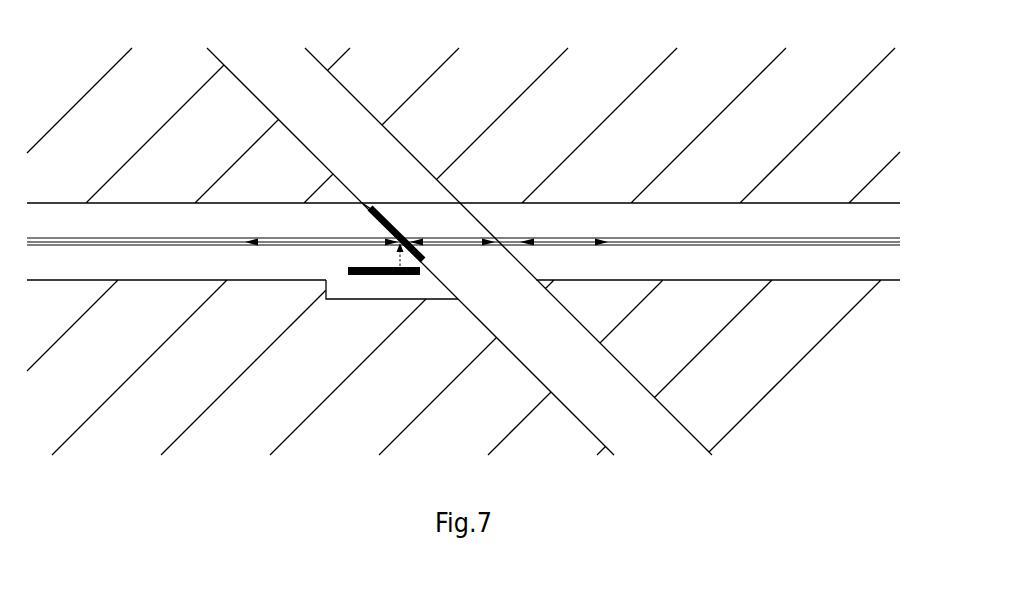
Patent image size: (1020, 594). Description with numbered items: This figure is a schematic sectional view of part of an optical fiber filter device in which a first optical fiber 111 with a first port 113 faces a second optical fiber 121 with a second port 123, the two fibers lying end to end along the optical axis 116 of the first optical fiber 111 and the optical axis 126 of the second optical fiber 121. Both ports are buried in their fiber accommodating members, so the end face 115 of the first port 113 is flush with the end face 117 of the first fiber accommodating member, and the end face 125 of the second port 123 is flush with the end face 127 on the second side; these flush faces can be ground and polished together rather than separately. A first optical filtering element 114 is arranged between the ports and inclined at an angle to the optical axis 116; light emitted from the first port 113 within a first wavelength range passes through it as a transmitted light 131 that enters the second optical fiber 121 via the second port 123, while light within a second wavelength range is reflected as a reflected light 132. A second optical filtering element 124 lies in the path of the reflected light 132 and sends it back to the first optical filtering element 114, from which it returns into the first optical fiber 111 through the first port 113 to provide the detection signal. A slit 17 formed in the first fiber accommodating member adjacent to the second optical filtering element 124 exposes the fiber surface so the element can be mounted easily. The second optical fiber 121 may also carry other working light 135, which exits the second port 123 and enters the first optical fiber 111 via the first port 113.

The slit 17 is at (400, 322).
The first optical fiber 111 is at (187, 218).
The first port 113 is at (370, 263).
The first optical filtering element 114 is at (387, 226).
The end face of the first port 115 is at (371, 209).
The optical axis of the first optical fiber 116 is at (222, 243).
The end face of the first fiber accommodating member 117 is at (525, 365).
The second optical fiber 121 is at (708, 223).
The second port 123 is at (517, 247).
The second optical filtering element 124 is at (388, 276).
The end face of the second port 125 is at (481, 240).
The optical axis of the second optical fiber 126 is at (713, 244).
The end face of the second port 127 is at (690, 430).
The transmitted light 131 is at (447, 242).
The reflected light 132 is at (410, 276).
The other working light 135 is at (547, 240).